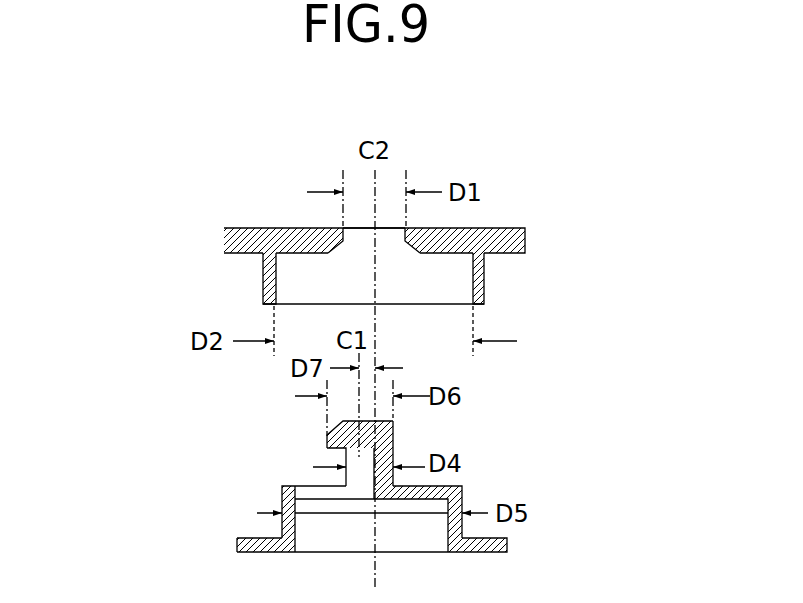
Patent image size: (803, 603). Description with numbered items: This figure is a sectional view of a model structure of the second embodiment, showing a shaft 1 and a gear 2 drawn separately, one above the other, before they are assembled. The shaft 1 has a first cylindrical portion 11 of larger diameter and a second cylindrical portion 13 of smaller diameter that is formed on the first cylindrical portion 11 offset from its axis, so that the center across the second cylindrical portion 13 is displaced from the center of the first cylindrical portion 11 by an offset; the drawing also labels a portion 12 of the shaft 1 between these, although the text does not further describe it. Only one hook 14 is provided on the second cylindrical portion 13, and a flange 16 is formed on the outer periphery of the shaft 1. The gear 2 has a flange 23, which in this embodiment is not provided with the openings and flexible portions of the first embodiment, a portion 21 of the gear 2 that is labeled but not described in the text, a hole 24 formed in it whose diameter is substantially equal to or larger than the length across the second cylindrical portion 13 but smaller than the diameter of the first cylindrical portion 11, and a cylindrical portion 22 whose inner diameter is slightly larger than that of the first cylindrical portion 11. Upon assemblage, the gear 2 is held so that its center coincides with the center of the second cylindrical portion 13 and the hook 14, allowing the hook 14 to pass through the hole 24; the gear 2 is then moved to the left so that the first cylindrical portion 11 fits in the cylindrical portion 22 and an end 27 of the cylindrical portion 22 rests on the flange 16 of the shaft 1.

The shaft 1 is at (180, 435).
The gear 2 is at (157, 237).
The first cylindrical portion 11 is at (283, 494).
The shaft portion 12 is at (313, 484).
The second cylindrical portion 13 is at (394, 440).
The hook 14 is at (327, 438).
The flange 16 is at (273, 538).
The plate portion 21 is at (525, 238).
The cylindrical portion 22 is at (484, 275).
The flange 23 is at (313, 236).
The hole 24 is at (387, 235).
The end 27 is at (272, 306).